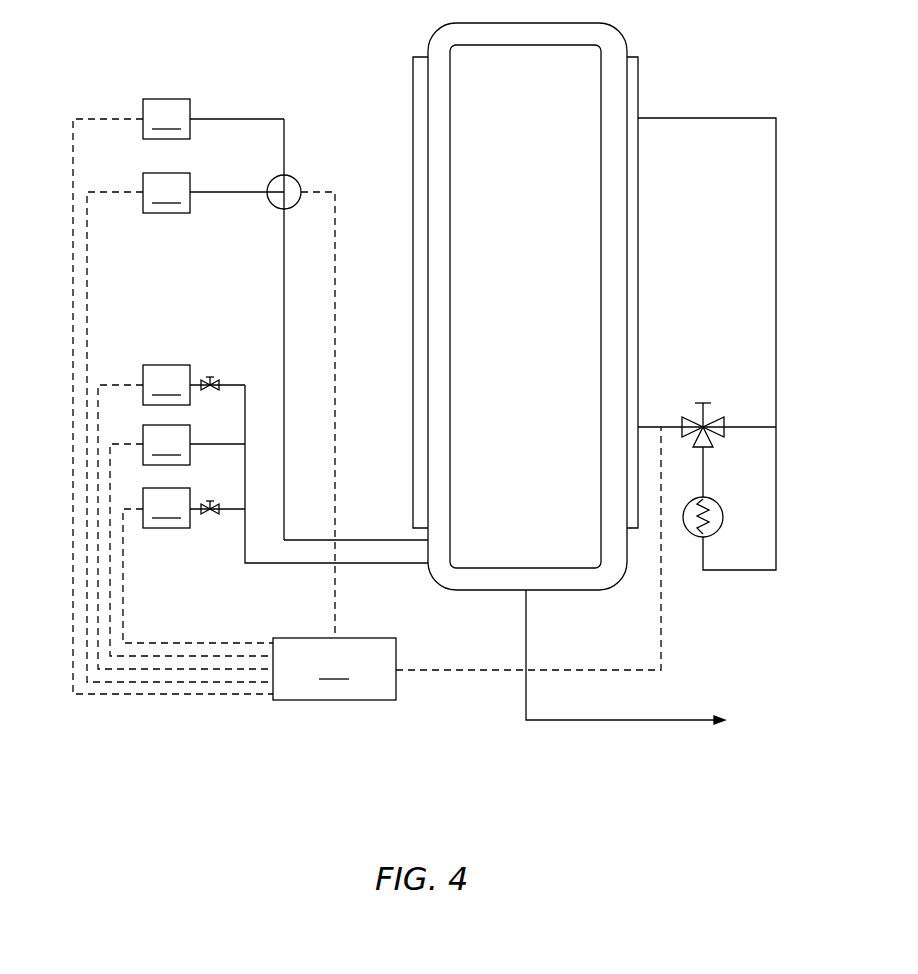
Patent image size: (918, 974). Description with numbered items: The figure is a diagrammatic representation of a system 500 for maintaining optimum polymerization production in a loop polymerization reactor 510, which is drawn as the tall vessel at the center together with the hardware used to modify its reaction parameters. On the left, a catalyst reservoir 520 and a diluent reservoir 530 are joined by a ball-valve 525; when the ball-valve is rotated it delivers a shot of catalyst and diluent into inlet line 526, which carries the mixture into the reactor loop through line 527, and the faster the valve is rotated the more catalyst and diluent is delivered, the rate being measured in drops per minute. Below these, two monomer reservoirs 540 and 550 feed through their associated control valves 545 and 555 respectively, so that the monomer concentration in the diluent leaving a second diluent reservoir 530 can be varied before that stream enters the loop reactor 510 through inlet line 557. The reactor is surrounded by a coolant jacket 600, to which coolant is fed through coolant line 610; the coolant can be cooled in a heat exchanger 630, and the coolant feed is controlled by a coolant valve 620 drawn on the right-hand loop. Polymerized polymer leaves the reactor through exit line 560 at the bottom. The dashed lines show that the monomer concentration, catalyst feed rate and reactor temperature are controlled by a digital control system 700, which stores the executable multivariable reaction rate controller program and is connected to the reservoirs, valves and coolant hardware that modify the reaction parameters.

The system 500 is at (323, 25).
The loop polymerization reactor 510 is at (440, 133).
The catalyst reservoir 520 is at (178, 396).
The ball-valve 525 is at (292, 172).
The inlet line 526 is at (303, 276).
The line 527 is at (369, 537).
The diluent reservoir 530 is at (185, 427).
The monomer reservoir 540 is at (185, 517).
The control valve 545 is at (211, 371).
The monomer reservoir 550 is at (198, 565).
The control valve 555 is at (210, 521).
The inlet line 557 is at (264, 569).
The exit line 560 is at (623, 725).
The coolant jacket 600 is at (640, 268).
The coolant line 610 is at (662, 425).
The coolant valve 620 is at (712, 402).
The heat exchanger 630 is at (716, 494).
The digital control system 700 is at (467, 563).